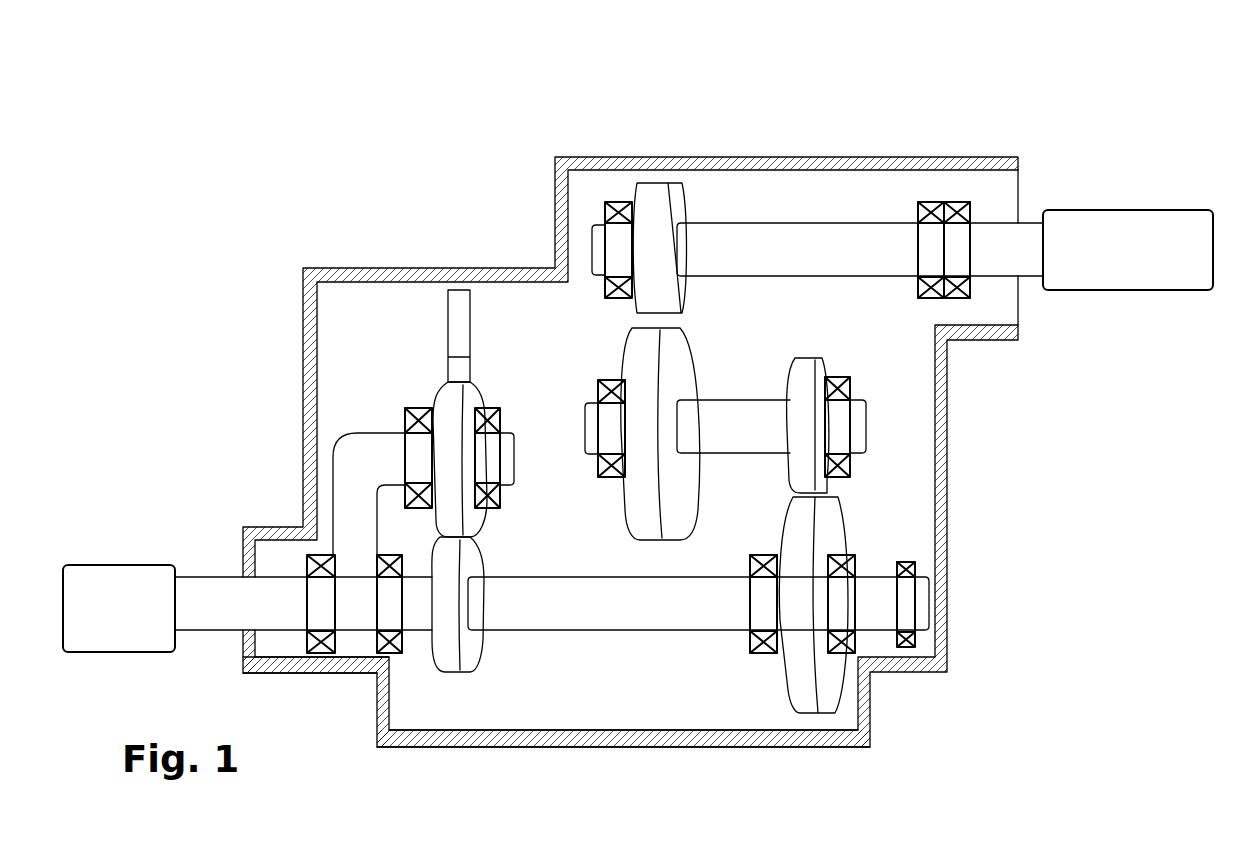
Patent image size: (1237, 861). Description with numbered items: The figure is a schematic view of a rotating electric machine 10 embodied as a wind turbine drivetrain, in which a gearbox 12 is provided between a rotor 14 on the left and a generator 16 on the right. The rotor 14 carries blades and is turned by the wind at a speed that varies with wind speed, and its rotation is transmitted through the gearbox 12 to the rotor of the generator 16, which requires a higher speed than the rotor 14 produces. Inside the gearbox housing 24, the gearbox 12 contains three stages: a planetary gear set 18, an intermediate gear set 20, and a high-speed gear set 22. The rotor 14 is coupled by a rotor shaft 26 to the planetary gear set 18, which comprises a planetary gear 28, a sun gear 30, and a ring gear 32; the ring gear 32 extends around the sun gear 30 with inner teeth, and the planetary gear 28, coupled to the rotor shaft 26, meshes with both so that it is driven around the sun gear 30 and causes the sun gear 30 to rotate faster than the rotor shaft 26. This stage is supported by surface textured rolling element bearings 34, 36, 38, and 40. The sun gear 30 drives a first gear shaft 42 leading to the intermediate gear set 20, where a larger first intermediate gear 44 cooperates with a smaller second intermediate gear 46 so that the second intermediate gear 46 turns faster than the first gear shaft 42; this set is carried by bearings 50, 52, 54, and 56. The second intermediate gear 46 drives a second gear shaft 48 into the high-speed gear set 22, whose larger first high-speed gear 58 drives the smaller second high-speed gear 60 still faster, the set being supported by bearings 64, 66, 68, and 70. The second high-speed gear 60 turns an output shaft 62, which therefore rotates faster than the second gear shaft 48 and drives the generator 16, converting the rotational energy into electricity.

The rotating electric machine 10 is at (985, 106).
The gearbox 12 is at (852, 157).
The rotor 14 is at (90, 564).
The generator 16 is at (1125, 292).
The planetary gear set 18 is at (446, 343).
The intermediate gear set 20 is at (830, 490).
The high-speed gear set 22 is at (637, 313).
The gearbox housing 24 is at (792, 750).
The rotor shaft 26 is at (218, 632).
The planetary gear 28 is at (483, 520).
The sun gear 30 is at (474, 655).
The ring gear 32 is at (472, 312).
The surface textured rolling element bearing 34 is at (320, 655).
The surface textured rolling element bearing 36 is at (395, 655).
The surface textured rolling element bearing 38 is at (404, 418).
The surface textured rolling element bearing 40 is at (508, 408).
The first gear shaft 42 is at (600, 632).
The first intermediate gear 44 is at (797, 680).
The second intermediate gear 46 is at (780, 470).
The second gear shaft 48 is at (747, 400).
The surface textured rolling element bearing 50 is at (748, 640).
The surface textured rolling element bearing 52 is at (843, 567).
The surface textured rolling element bearing 54 is at (912, 562).
The surface textured rolling element bearing 56 is at (852, 390).
The first high-speed gear 58 is at (690, 515).
The second high-speed gear 60 is at (683, 190).
The output shaft 62 is at (788, 223).
The surface textured rolling element bearing 64 is at (610, 480).
The surface textured rolling element bearing 66 is at (624, 200).
The surface textured rolling element bearing 68 is at (915, 210).
The surface textured rolling element bearing 70 is at (975, 208).